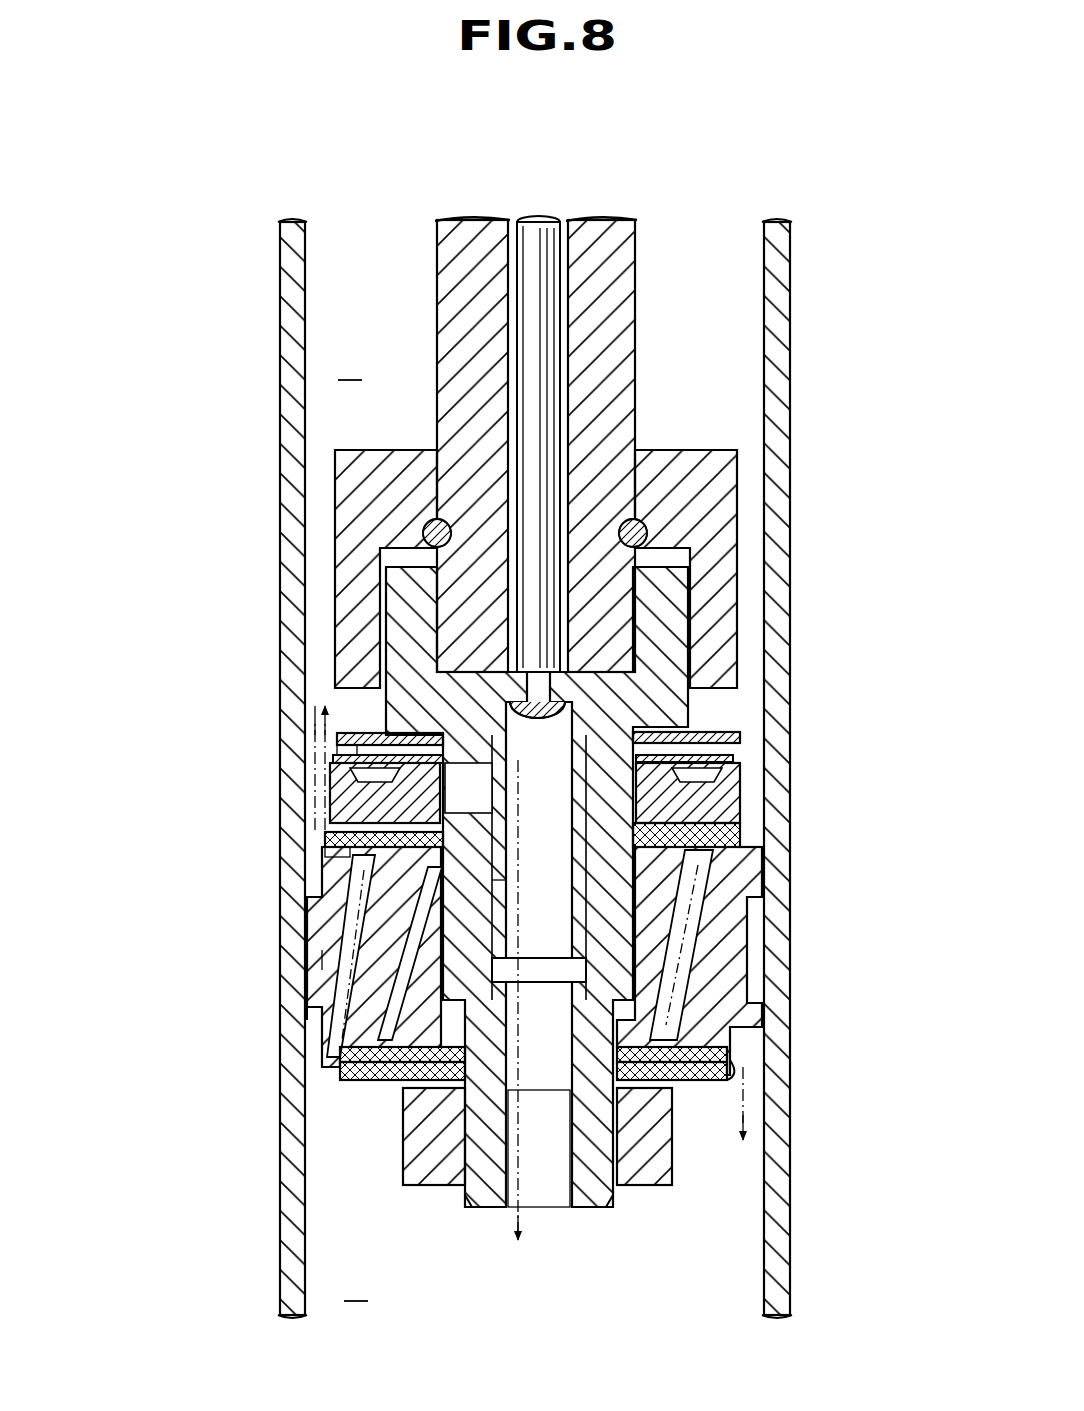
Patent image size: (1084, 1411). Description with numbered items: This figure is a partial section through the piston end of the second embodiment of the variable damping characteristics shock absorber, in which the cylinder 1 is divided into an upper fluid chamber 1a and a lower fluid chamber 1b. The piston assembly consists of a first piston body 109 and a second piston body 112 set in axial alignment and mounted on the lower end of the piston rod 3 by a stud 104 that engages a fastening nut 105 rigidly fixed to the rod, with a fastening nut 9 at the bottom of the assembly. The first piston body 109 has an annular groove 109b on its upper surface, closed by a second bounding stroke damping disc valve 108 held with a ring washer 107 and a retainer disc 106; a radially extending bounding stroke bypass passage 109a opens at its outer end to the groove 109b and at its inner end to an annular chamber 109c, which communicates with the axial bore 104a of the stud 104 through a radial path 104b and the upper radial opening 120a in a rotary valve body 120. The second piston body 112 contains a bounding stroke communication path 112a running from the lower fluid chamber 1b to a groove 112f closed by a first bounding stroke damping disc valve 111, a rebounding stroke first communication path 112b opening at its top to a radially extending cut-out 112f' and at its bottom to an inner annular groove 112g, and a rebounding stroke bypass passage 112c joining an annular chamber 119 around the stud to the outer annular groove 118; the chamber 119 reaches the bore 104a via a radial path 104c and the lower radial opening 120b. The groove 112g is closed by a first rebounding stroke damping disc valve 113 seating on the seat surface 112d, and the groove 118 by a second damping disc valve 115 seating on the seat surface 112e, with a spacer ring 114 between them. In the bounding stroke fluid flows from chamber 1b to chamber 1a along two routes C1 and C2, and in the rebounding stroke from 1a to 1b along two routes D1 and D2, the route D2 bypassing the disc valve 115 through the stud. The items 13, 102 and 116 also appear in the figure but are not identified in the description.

The outer pipe 1 is at (794, 354).
The upper fluid chamber 1a is at (352, 368).
The lower fluid chamber 1b is at (358, 1289).
The piston rod 3 is at (636, 262).
The cable 13 is at (556, 447).
The fastening nut 105 is at (738, 520).
The rotary valve body 120 is at (596, 672).
The upper radial opening 120a is at (508, 792).
The lower radial opening 120b is at (500, 892).
The stud 104 is at (692, 712).
The axially extending bore 104a is at (533, 1163).
The radial path 104b is at (384, 676).
The radial path 104c is at (470, 885).
The retainer disc 106 is at (395, 733).
The ring washer 107 is at (395, 713).
The second bounding stroke damping disc valve 108 is at (395, 757).
The first piston body 109 is at (350, 792).
The radially extending bounding stroke bypass passage 109a is at (650, 800).
The annular groove 109b is at (736, 745).
The annular chamber 109c is at (360, 780).
The second route C2 is at (340, 810).
The first route C1 is at (330, 960).
The first bounding stroke damping disc valve 111 is at (345, 838).
The second piston body 112 is at (731, 917).
The bounding stroke communication path 112a is at (327, 1022).
The rebounding stroke first communication path 112b is at (678, 977).
The rebounding stroke bypass passage 112c is at (385, 985).
The seat surface 112d is at (698, 1040).
The seat surface 112e is at (733, 1080).
The groove 112f is at (295, 862).
The radially extending cut-out 112f' is at (757, 816).
The inner annular groove 112g is at (440, 1082).
The cover 102 is at (764, 849).
The first rebounding stroke damping disc valve 113 is at (680, 1080).
The spacer ring 114 is at (677, 1082).
The second damping disc valve 115 is at (345, 1075).
The nut 116 is at (430, 1100).
The outer annular groove 118 is at (345, 1058).
The annular chamber 119 is at (355, 915).
The fastening nut 9 is at (648, 1163).
The first route D1 is at (750, 1110).
The second route D2 is at (508, 1212).